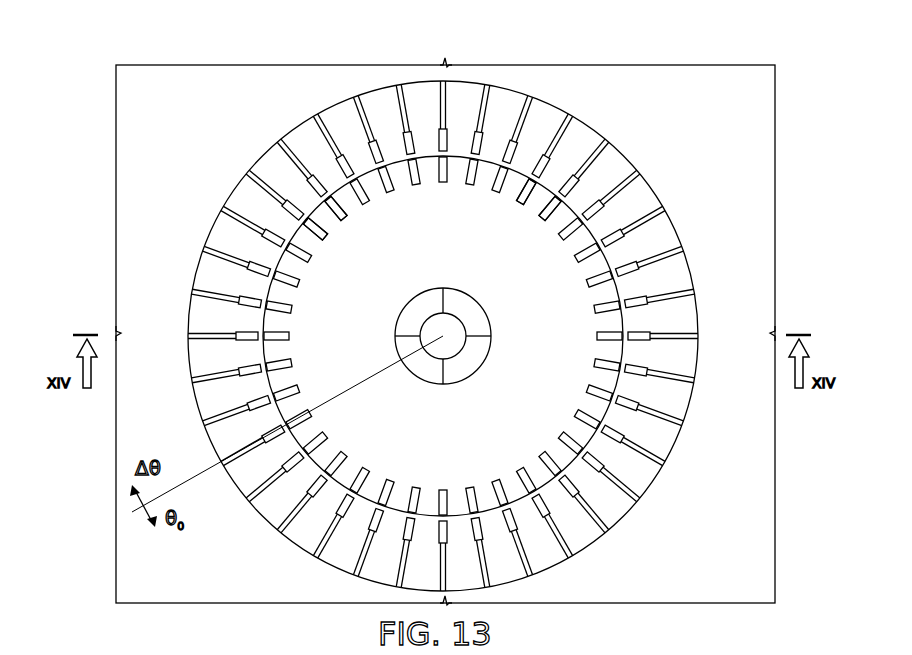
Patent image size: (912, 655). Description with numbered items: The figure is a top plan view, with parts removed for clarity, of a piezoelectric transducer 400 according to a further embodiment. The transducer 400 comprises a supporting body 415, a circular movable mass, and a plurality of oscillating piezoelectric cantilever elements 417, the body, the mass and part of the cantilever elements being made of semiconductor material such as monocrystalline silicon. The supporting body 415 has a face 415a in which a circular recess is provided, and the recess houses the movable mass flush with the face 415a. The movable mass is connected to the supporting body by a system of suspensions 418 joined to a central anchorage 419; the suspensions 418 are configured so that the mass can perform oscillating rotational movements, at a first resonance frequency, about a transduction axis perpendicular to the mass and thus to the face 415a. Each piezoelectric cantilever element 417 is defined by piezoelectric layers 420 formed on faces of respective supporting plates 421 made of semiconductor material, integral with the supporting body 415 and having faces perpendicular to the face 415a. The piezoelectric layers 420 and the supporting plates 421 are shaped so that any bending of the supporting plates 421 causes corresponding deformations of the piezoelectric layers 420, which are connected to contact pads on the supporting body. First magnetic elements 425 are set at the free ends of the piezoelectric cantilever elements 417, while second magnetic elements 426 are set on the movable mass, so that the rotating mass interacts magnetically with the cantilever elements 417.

The piezoelectric transducer 400 is at (446, 329).
The supporting body 415 is at (168, 88).
The face 415a is at (178, 587).
The piezoelectric cantilever elements 417 is at (447, 307).
The suspensions 418 is at (439, 329).
The central anchorage 419 is at (458, 318).
The piezoelectric layers 420 is at (653, 224).
The supporting plates 421 is at (652, 204).
The first magnetic elements 425 is at (508, 184).
The second magnetic elements 426 is at (530, 205).